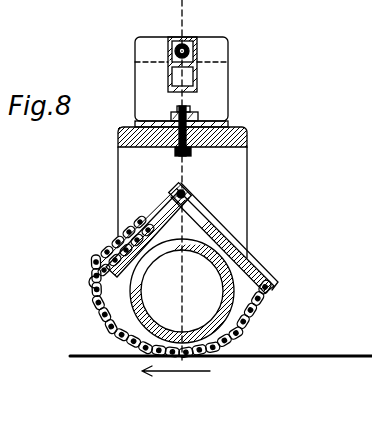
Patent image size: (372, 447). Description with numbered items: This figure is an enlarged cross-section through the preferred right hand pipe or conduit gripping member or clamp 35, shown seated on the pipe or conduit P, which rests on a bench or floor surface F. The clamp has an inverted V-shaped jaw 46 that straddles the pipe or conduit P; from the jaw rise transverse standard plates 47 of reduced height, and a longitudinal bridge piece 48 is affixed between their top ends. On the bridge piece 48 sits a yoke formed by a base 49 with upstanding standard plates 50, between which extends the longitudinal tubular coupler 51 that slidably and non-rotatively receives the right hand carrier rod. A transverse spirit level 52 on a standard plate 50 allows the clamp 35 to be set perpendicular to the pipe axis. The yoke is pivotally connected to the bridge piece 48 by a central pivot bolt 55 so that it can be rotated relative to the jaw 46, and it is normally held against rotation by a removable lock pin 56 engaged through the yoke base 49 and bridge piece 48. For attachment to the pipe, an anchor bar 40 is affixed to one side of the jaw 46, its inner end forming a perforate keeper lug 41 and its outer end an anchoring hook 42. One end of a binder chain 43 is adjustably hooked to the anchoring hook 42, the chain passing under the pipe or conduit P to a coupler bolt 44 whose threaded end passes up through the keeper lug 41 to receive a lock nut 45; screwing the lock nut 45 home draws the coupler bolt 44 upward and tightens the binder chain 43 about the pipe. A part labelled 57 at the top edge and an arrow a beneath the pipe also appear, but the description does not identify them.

The right hand pipe or conduit gripping member or clamp 35 is at (213, 179).
The anchor bar 40 is at (166, 214).
The perforate keeper lug 41 is at (191, 199).
The anchoring hook 42 is at (93, 279).
The binder chain 43 is at (106, 310).
The coupler bolt 44 is at (228, 250).
The lock nut 45 is at (184, 190).
The inverted V-shaped jaw 46 is at (218, 241).
The transverse standard plates 47 is at (118, 182).
The longitudinal bridge piece 48 is at (249, 131).
The yoke base 49 is at (210, 121).
The standard plates of the yoke 50 is at (135, 79).
The longitudinal tubular coupler 51 is at (172, 90).
The transverse spirit level 52 is at (188, 40).
The central pivot bolt 55 is at (175, 150).
The removable lock pin 56 is at (226, 119).
The support 57 is at (292, 14).
The pipe or conduit P is at (258, 311).
The floor surface F is at (258, 355).
The direction arrow a is at (164, 367).